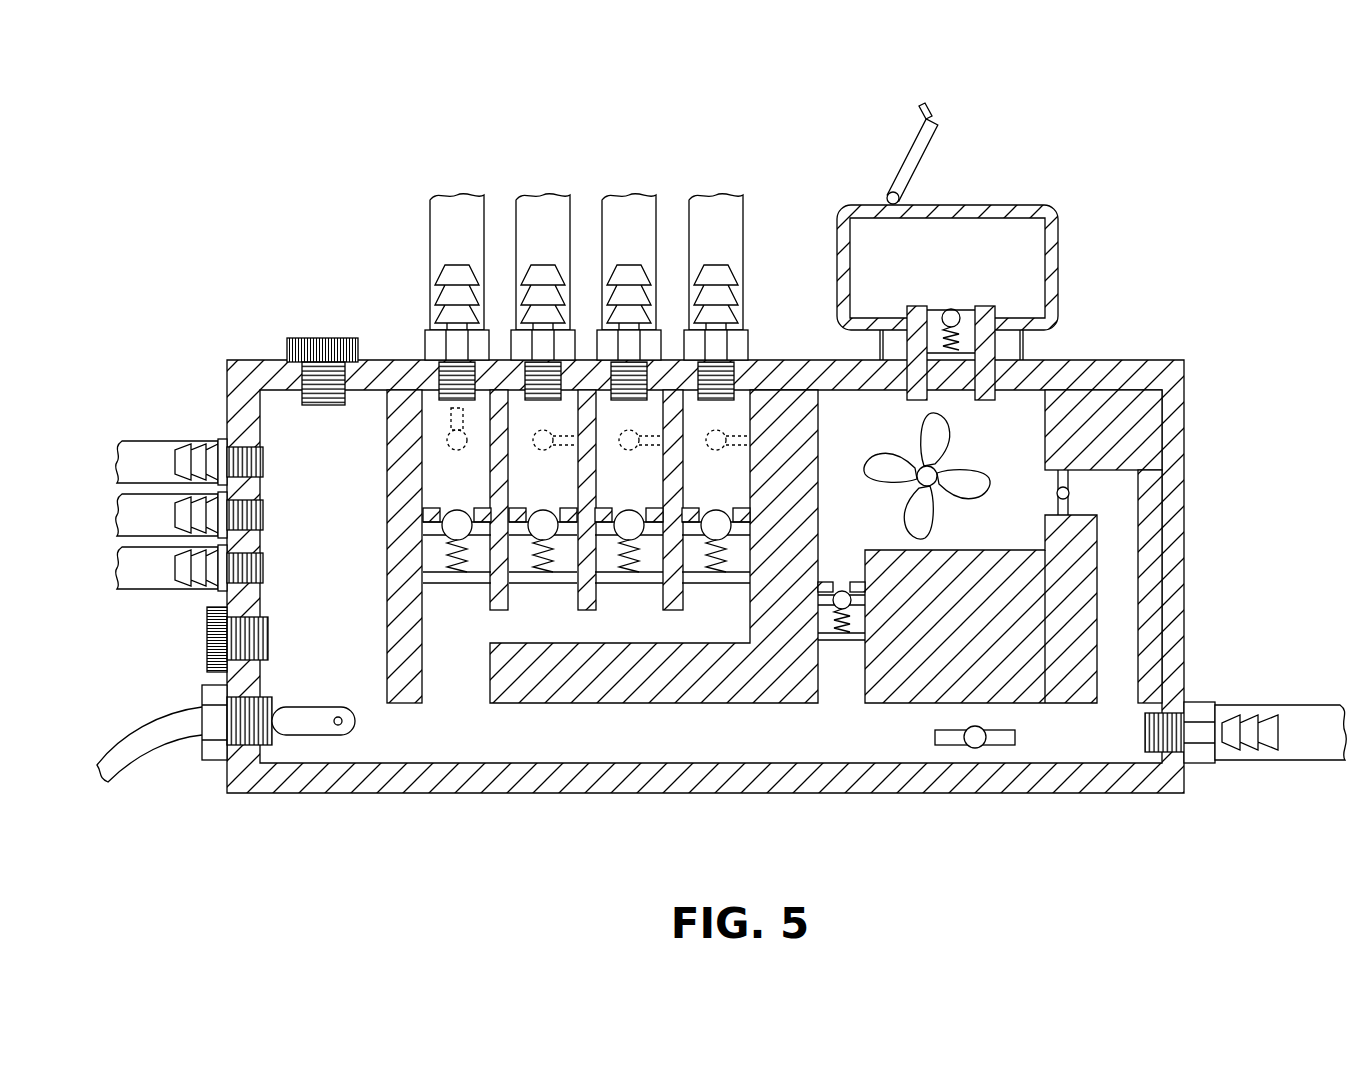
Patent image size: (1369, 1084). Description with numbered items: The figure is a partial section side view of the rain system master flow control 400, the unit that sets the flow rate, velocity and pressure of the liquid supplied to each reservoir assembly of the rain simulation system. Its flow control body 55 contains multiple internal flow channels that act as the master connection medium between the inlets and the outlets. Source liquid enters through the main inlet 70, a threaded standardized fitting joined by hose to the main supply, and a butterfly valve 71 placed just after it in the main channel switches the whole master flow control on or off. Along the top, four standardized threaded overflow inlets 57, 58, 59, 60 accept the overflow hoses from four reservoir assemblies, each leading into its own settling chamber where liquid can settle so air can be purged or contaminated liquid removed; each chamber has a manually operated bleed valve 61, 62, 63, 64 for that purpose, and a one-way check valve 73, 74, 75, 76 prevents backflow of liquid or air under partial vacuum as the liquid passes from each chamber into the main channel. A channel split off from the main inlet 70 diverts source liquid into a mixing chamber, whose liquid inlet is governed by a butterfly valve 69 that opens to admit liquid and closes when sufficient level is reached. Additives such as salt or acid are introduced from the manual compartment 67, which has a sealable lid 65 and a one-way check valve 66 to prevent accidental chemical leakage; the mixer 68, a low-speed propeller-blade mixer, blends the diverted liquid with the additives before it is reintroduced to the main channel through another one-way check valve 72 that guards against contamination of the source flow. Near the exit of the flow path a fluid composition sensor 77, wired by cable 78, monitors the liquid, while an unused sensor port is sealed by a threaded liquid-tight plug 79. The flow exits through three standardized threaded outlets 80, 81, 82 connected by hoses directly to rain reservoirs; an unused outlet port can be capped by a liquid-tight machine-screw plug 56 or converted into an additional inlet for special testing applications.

The rain system master flow control 400 is at (1152, 128).
The flow control body 55 is at (228, 382).
The plug 56 is at (303, 336).
The overflow inlet 57 is at (457, 260).
The overflow inlet 58 is at (542, 260).
The overflow inlet 59 is at (629, 260).
The overflow inlet 60 is at (716, 260).
The bleed valve 61 is at (444, 438).
The bleed valve 62 is at (530, 436).
The bleed valve 63 is at (616, 436).
The bleed valve 64 is at (727, 436).
The sealable lid 65 is at (900, 158).
The one-way check valve 66 is at (956, 306).
The manual compartment 67 is at (1034, 262).
The mixer 68 is at (963, 447).
The butterfly valve 69 is at (1077, 493).
The main inlet 70 is at (1272, 712).
The butterfly valve 71 is at (1000, 749).
The one-way check valve 72 is at (840, 637).
The one-way check valve 73 is at (712, 547).
The one-way check valve 74 is at (627, 547).
The one-way check valve 75 is at (540, 547).
The one-way check valve 76 is at (455, 547).
The fluid composition sensor 77 is at (320, 740).
The cable 78 is at (136, 763).
The plug 79 is at (205, 652).
The outlet 80 is at (162, 572).
The outlet 81 is at (162, 518).
The outlet 82 is at (162, 465).